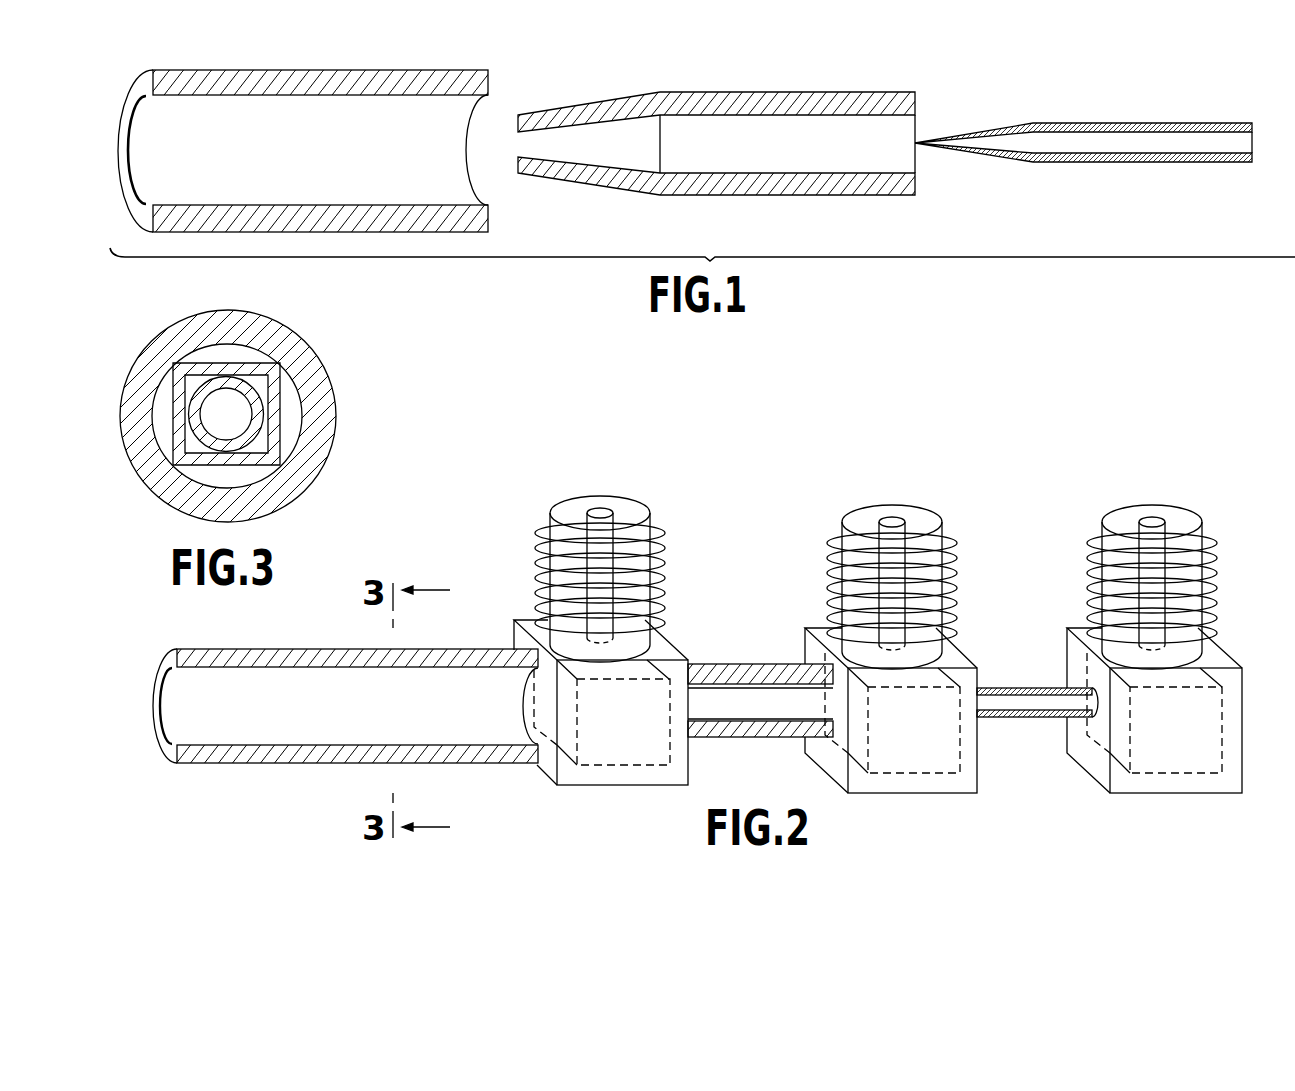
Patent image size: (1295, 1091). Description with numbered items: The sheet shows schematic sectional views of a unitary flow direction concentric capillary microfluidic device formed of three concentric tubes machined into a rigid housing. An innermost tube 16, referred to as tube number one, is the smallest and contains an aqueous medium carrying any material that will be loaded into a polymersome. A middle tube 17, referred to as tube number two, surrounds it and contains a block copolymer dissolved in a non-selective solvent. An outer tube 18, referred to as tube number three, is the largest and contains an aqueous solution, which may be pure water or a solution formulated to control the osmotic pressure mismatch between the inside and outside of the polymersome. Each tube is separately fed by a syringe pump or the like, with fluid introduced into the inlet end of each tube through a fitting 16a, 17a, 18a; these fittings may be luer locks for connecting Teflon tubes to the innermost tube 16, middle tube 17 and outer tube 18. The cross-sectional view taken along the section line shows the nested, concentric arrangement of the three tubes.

In FIG. 1, the innermost tube 16 is at (1151, 123).
In FIG. 3, the innermost tube 16 is at (257, 447).
In FIG. 2, the innermost tube 16 is at (1040, 717).
In FIG. 1, the middle tube 17 is at (778, 92).
In FIG. 3, the middle tube 17 is at (273, 420).
In FIG. 2, the middle tube 17 is at (757, 737).
In FIG. 1, the outer tube 18 is at (270, 69).
In FIG. 3, the outer tube 18 is at (310, 357).
In FIG. 2, the outer tube 18 is at (255, 758).
In FIG. 2, the fitting 16a is at (1150, 565).
In FIG. 2, the fitting 17a is at (890, 565).
In FIG. 2, the fitting 18a is at (600, 562).